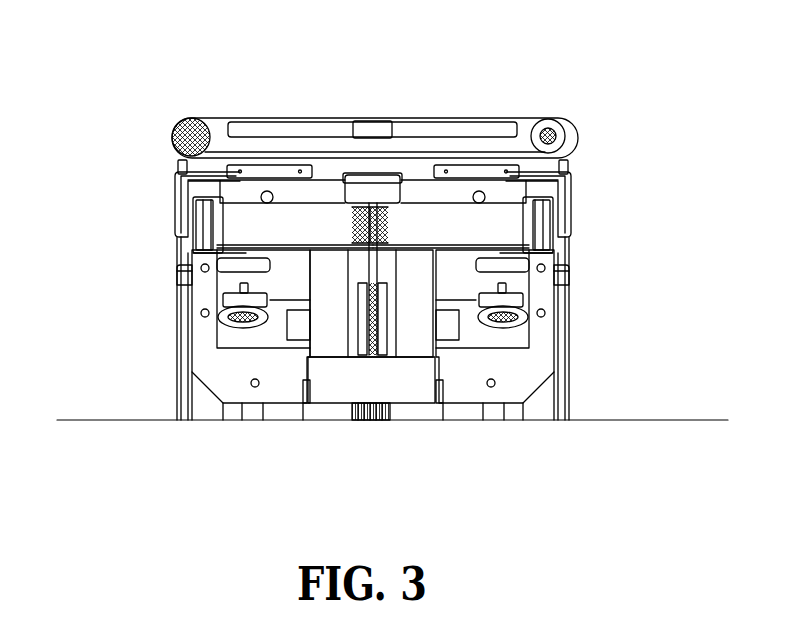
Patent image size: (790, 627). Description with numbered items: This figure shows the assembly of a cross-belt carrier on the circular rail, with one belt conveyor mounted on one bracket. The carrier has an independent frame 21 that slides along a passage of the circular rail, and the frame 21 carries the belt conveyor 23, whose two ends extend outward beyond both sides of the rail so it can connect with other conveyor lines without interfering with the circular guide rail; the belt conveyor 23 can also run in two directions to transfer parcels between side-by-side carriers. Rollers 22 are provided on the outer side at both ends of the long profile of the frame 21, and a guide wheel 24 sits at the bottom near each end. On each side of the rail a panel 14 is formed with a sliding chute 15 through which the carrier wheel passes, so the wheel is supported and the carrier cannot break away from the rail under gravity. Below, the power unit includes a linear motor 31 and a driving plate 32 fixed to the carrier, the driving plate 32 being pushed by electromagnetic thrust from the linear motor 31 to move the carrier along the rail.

The panel 14 is at (190, 243).
The sliding chute 15 is at (183, 218).
The frame 21 is at (345, 180).
The roller 22 is at (560, 178).
The belt conveyor 23 is at (447, 118).
The guide wheel 24 is at (557, 280).
The linear motor 31 is at (373, 272).
The driving plate 32 is at (377, 276).